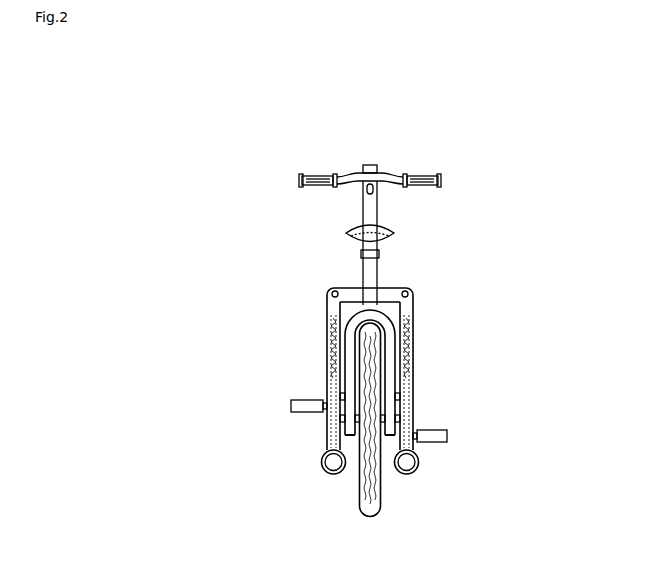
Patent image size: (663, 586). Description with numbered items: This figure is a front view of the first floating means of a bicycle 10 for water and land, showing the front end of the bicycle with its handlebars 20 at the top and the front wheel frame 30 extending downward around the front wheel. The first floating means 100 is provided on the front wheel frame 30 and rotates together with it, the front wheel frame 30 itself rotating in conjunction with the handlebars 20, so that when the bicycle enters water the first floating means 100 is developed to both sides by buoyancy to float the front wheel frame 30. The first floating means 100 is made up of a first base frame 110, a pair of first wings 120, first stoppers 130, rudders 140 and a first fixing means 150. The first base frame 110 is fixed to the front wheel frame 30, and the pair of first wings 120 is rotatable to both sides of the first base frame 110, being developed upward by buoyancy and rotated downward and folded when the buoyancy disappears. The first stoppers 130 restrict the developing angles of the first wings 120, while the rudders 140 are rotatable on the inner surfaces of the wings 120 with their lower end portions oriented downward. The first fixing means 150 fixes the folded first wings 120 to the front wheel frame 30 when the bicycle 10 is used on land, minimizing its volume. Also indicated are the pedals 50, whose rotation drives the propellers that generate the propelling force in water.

The bicycle for water and land 10 is at (388, 127).
The handlebars 20 is at (306, 163).
The front wheel frame 30 is at (345, 498).
The pedals 50 is at (291, 406).
The first floating means 100 is at (420, 280).
The first base frame 110 is at (352, 296).
The first wings 120 is at (406, 314).
The first stoppers 130 is at (400, 352).
The rudders 140 is at (400, 417).
The first fixing means 150 is at (400, 395).